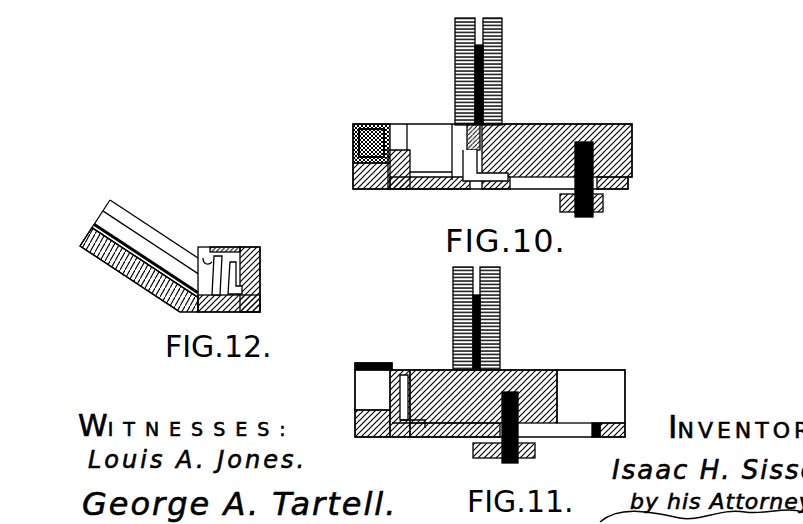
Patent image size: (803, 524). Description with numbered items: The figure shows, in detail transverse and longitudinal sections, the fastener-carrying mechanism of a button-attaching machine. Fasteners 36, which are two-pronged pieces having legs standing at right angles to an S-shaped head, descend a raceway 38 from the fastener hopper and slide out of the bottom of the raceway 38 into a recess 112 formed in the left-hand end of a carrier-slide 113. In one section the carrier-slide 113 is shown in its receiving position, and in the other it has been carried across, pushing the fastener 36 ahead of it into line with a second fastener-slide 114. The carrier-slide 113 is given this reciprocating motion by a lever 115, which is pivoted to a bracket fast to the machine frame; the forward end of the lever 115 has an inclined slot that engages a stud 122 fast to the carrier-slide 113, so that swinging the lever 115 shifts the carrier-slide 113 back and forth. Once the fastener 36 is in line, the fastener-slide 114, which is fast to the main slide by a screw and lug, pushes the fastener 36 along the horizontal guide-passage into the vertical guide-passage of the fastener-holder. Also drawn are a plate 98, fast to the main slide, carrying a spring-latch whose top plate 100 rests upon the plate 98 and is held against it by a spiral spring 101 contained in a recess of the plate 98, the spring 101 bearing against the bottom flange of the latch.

In FIG. 10, the fastener 36 is at (458, 187).
In FIG. 11, the fastener 36 is at (390, 437).
In FIG. 12, the fastener 36 is at (250, 285).
In FIG. 10, the raceway 38 is at (497, 63).
In FIG. 11, the raceway 38 is at (500, 313).
In FIG. 12, the raceway 38 is at (150, 272).
In FIG. 11, the plate 98 is at (365, 400).
In FIG. 10, the top plate 100 is at (362, 123).
In FIG. 11, the top plate 100 is at (388, 364).
In FIG. 10, the spiral spring 101 is at (353, 148).
In FIG. 10, the recess 112 is at (500, 128).
In FIG. 11, the recess 112 is at (412, 372).
In FIG. 12, the recess 112 is at (208, 258).
In FIG. 10, the carrier-slide 113 is at (565, 128).
In FIG. 11, the carrier-slide 113 is at (545, 370).
In FIG. 12, the carrier-slide 113 is at (261, 265).
In FIG. 10, the fastener-slide 114 is at (356, 175).
In FIG. 11, the fastener-slide 114 is at (417, 432).
In FIG. 10, the lever 115 is at (600, 212).
In FIG. 11, the lever 115 is at (536, 449).
In FIG. 10, the stud 122 is at (605, 200).
In FIG. 11, the stud 122 is at (519, 460).